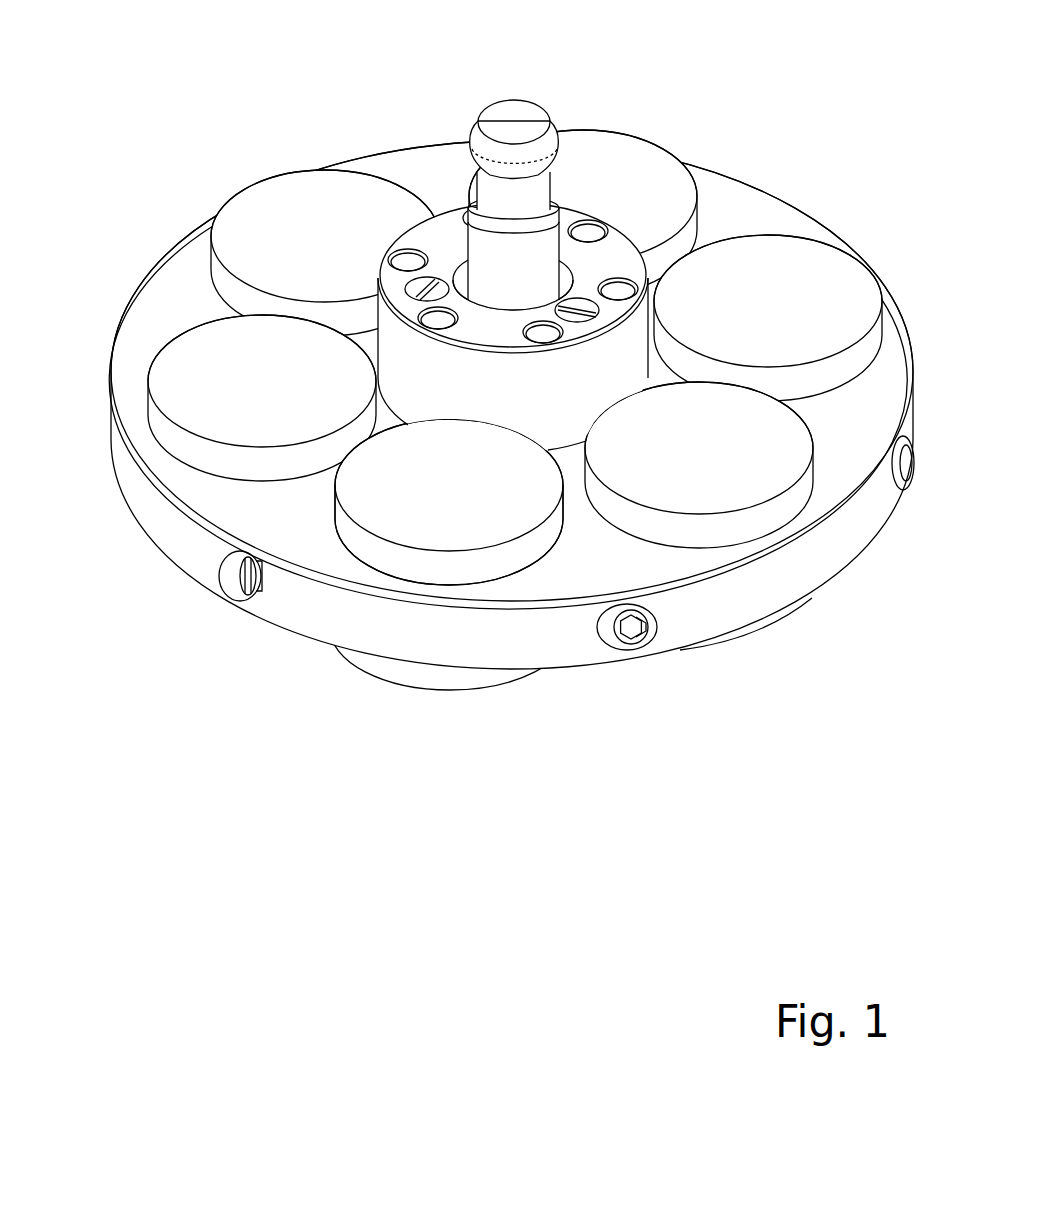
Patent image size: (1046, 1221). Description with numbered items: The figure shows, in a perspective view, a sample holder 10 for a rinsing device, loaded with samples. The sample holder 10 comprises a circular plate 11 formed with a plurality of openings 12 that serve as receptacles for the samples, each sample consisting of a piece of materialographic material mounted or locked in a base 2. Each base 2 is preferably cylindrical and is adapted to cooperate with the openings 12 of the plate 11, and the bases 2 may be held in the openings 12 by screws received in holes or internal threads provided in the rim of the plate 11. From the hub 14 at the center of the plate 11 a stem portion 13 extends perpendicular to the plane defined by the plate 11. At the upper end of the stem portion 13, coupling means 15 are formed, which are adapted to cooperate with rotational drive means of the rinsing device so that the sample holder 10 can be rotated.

The base 2 is at (243, 398).
The sample holder 10 is at (173, 204).
The circular plate 11 is at (740, 220).
The opening 12 is at (562, 522).
The stem portion 13 is at (517, 263).
The hub 14 is at (393, 357).
The coupling means 15 is at (528, 193).